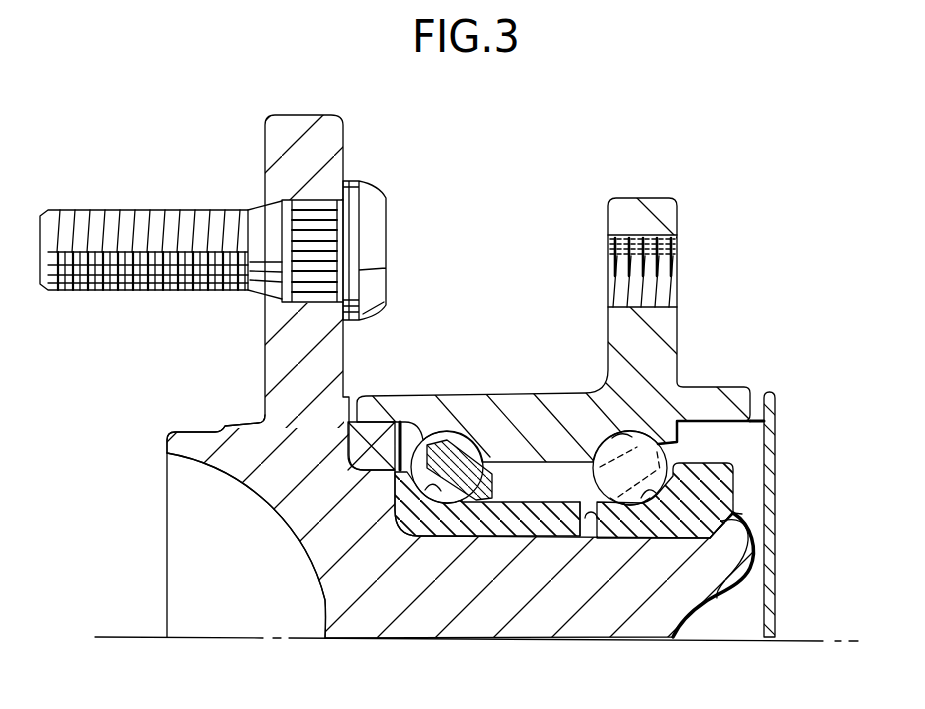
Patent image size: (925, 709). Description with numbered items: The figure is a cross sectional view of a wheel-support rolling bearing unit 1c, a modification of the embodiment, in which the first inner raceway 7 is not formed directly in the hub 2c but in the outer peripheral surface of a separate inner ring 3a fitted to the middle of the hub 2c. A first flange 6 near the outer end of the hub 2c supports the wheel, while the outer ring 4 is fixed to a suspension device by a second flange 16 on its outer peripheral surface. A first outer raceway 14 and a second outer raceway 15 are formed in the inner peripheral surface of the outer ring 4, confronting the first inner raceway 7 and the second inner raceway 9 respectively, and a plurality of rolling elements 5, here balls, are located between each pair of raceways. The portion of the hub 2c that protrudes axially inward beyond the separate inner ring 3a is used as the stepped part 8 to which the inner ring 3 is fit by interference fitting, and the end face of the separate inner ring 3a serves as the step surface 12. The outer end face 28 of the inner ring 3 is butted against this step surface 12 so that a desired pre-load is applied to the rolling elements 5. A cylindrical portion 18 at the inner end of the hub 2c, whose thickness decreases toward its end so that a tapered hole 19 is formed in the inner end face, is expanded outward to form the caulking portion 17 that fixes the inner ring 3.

The hub unit bearing assembly 1c is at (515, 160).
The hub 2c is at (238, 442).
The inner ring 3 is at (740, 472).
The separate inner ring 3a is at (322, 606).
The outer ring 4 is at (536, 394).
The rolling elements 5 is at (443, 436).
The first flange 6 is at (305, 124).
The first inner raceway 7 is at (436, 492).
The stepped part 8 is at (630, 540).
The second inner raceway 9 is at (644, 506).
The step surface 12 is at (595, 512).
The first outer raceway 14 is at (461, 430).
The second outer raceway 15 is at (626, 437).
The second flange 16 is at (639, 205).
The caulking portion 17 is at (748, 522).
The cylindrical portion 18 is at (733, 568).
The tapered hole 19 is at (717, 598).
The outer end face 28 is at (580, 504).